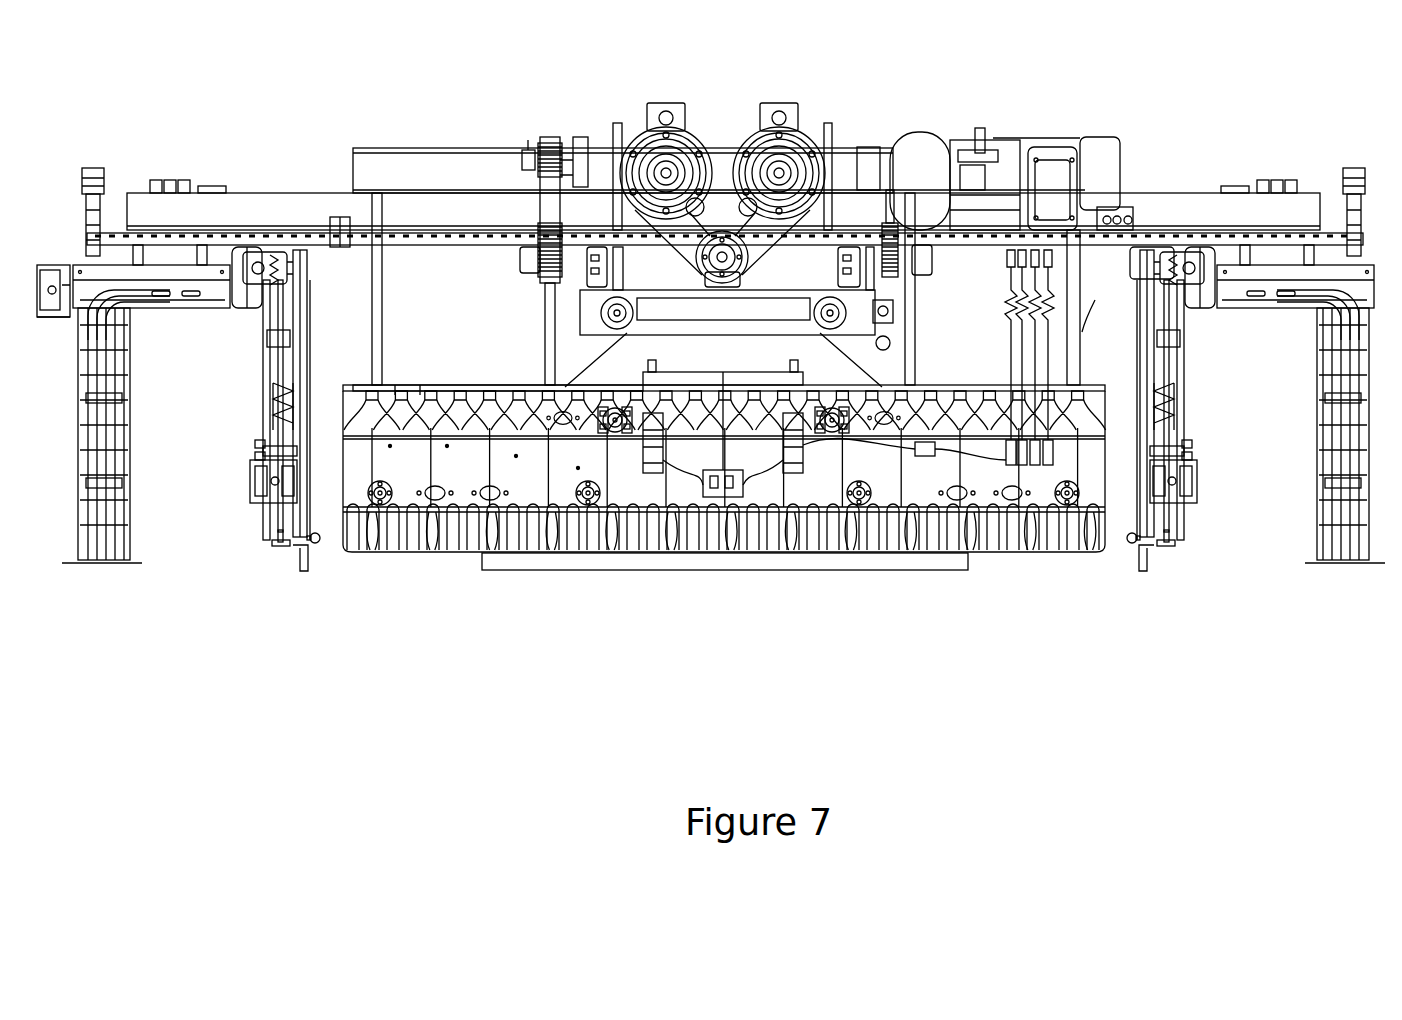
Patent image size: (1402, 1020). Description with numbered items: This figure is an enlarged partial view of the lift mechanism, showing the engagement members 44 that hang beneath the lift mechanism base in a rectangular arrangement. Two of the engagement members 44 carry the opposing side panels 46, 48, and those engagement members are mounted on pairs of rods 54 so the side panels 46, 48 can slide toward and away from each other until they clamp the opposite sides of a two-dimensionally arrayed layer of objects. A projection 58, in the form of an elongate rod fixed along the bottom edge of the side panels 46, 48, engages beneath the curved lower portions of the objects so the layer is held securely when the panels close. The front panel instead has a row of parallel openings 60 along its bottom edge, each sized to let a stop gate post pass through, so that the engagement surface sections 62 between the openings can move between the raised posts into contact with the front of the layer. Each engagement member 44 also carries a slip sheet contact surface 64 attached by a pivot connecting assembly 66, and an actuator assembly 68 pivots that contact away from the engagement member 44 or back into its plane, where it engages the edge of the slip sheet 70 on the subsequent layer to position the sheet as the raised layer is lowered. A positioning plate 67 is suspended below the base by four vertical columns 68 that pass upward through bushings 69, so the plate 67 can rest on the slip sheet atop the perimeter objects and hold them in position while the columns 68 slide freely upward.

The engagement member 44 is at (307, 364).
The side panel 46 is at (317, 520).
The side panel 48 is at (1133, 513).
The rods 54 is at (458, 385).
The projection 58 is at (316, 546).
The openings 60 is at (455, 550).
The engagement surface sections 62 is at (465, 548).
The slip sheet contact surface 64 is at (300, 560).
The pivot connecting assembly 66 is at (292, 337).
The positioning plate 67 is at (548, 385).
The actuator assembly 68 is at (288, 232).
The bushings 69 is at (331, 196).
The slip sheet 70 is at (405, 385).